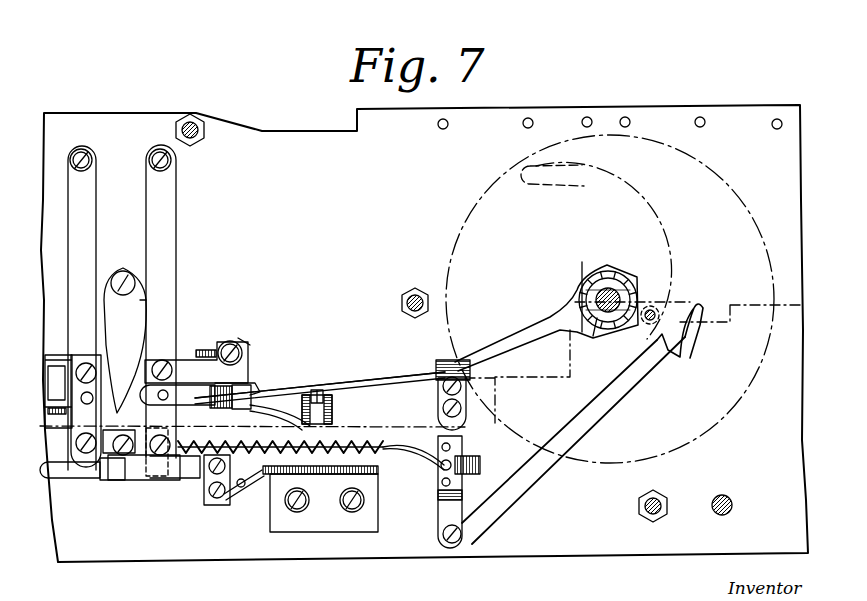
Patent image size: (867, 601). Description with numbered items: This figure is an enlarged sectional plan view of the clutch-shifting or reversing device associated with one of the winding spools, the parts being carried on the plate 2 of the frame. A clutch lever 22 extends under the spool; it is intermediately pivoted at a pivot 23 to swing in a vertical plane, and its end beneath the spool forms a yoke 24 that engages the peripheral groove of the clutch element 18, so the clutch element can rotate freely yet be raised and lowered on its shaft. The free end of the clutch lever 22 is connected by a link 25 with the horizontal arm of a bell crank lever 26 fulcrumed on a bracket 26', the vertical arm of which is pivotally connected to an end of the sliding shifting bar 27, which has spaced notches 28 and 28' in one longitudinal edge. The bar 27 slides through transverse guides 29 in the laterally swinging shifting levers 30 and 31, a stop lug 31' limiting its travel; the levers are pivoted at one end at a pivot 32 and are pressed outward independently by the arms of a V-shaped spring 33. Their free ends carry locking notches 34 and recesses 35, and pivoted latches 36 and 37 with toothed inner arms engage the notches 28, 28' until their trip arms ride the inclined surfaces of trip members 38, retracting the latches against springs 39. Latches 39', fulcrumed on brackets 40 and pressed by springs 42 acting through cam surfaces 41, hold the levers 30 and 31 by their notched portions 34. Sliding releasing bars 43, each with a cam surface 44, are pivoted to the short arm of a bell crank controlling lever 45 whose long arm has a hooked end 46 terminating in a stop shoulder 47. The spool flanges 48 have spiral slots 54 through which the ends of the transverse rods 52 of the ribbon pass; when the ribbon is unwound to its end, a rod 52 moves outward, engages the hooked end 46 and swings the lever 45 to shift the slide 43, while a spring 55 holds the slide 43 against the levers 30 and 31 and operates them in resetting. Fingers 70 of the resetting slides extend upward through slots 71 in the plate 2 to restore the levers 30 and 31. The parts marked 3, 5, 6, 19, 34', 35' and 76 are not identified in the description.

The plate 2 is at (535, 553).
The fastening nuts 3 is at (197, 136).
The collar tip 5 is at (610, 330).
The direction arrow 6 is at (43, 424).
The clutch element 18 is at (627, 283).
The toothed hub 19 is at (611, 273).
The clutch lever 22 is at (530, 340).
The pivot 23 is at (458, 362).
The yoke 24 is at (571, 286).
The link 25 is at (262, 396).
The bell crank lever 26 is at (320, 374).
The bracket 26' is at (345, 407).
The sliding shifting bar 27 is at (136, 481).
The notch 28 is at (195, 340).
The notch 28' is at (210, 345).
The transverse guide 29 is at (82, 360).
The shifting lever 30 is at (90, 225).
The shifting lever 31 is at (178, 301).
The stop lug 31' is at (252, 418).
The pivot 32 is at (155, 152).
The V-shaped spring 33 is at (143, 307).
The locking notch 34 is at (70, 484).
The bracket 34' is at (179, 479).
The recess 35 is at (117, 468).
The slide 35' is at (160, 472).
The pivoted latch 36 is at (48, 380).
The pivoted latch 37 is at (258, 386).
The trip member 38 is at (240, 376).
The spring 39 is at (125, 340).
The latch 39' is at (213, 505).
The bracket 40 is at (232, 502).
The cam surface 41 is at (305, 513).
The spring 42 is at (278, 482).
The sliding releasing bar 43 is at (373, 441).
The cam surface 44 is at (272, 535).
The bell crank controlling lever 45 is at (530, 480).
The hooked end 46 is at (705, 335).
The stop shoulder 47 is at (687, 345).
The flange 48 is at (751, 210).
The transverse rod 52 is at (658, 311).
The spiral slot 54 is at (672, 212).
The spring 55 is at (383, 452).
The finger 70 is at (58, 354).
The slot 71 is at (196, 363).
The reference line 76 is at (644, 359).